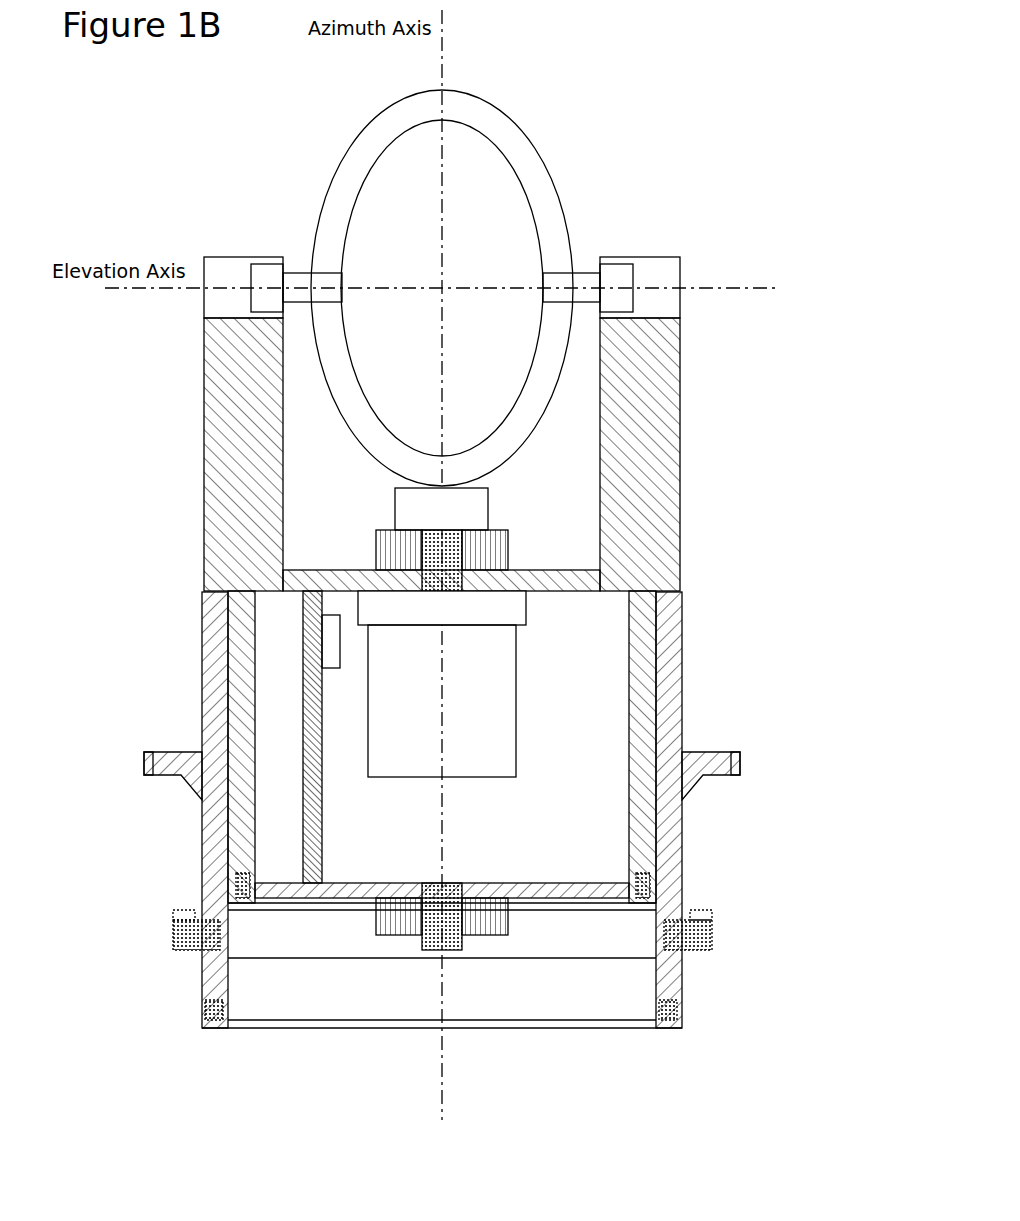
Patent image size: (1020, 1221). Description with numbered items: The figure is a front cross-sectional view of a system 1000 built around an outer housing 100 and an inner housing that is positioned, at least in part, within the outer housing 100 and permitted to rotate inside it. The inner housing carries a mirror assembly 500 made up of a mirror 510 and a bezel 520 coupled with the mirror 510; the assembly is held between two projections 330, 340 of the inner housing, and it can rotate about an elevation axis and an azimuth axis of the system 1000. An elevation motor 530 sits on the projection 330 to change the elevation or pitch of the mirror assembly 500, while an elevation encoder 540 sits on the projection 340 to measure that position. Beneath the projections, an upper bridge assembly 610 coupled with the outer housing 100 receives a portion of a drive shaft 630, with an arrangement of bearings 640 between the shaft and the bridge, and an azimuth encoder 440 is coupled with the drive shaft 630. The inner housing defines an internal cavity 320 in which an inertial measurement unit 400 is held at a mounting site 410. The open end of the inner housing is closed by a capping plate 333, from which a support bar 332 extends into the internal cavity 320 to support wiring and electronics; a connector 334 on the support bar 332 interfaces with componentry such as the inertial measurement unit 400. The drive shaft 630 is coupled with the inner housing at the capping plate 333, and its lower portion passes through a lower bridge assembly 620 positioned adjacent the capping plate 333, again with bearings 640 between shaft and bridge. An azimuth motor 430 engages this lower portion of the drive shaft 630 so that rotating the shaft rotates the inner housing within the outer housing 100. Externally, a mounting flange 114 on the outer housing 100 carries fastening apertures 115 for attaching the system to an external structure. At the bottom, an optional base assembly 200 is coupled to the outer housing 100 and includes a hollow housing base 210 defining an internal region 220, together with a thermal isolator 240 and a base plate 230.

The system 1000 is at (652, 152).
The mirror assembly 500 is at (467, 270).
The mirror 510 is at (496, 173).
The bezel 520 is at (486, 116).
The elevation motor 530 is at (224, 273).
The elevation encoder 540 is at (662, 273).
The projection 330 is at (222, 372).
The projection 340 is at (658, 374).
The azimuth encoder 440 is at (390, 500).
The upper bridge assembly 610 is at (383, 545).
The bearings 640 is at (424, 527).
The drive shaft 630 is at (454, 597).
The mounting site 410 is at (406, 618).
The inertial measurement unit 400 is at (412, 709).
The outer housing 100 is at (218, 632).
The base assembly 200 is at (248, 662).
The internal cavity 320 is at (580, 740).
The support bar 332 is at (302, 690).
The connector 334 is at (326, 626).
The mounting flange 114 is at (184, 750).
The fastening apertures 115 is at (158, 772).
The capping plate 333 is at (562, 871).
The azimuth motor 430 is at (635, 946).
The housing base 210 is at (200, 993).
The internal region 220 is at (547, 999).
The lower bridge assembly 620 is at (385, 938).
The thermal isolator 240 is at (206, 946).
The base plate 230 is at (271, 1032).